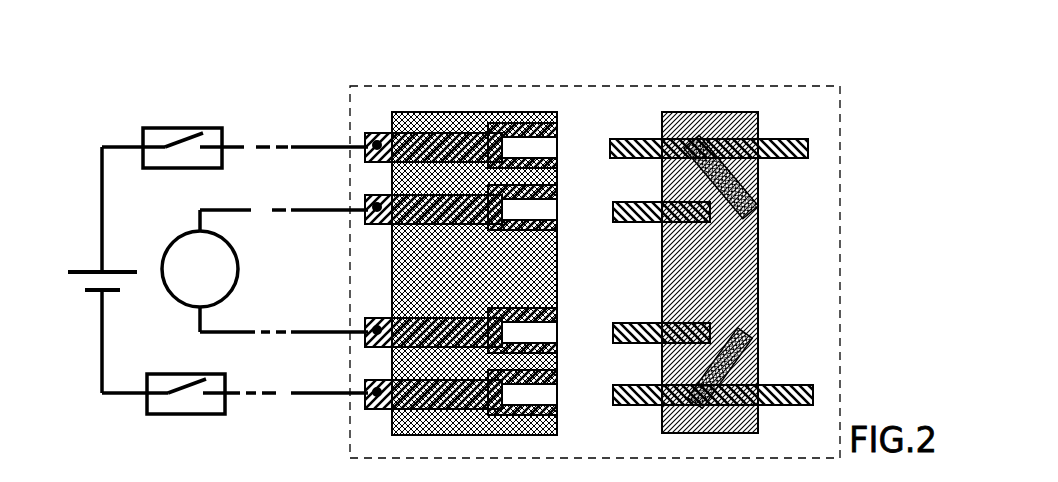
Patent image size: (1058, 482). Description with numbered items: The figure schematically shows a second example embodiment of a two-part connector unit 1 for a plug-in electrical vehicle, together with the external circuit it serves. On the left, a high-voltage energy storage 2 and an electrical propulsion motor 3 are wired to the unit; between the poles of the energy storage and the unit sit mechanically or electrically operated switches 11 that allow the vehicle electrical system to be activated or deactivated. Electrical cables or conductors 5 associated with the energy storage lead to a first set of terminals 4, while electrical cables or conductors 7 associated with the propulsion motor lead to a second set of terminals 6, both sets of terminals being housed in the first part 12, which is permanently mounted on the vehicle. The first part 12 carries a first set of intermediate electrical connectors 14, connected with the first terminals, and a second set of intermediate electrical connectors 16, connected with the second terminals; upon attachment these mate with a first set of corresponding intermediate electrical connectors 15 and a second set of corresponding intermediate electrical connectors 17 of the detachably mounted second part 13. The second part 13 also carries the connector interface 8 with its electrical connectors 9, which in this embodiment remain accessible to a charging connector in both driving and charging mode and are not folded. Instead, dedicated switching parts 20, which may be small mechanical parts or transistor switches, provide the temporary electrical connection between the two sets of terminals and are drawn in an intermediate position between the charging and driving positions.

The connector unit 1 is at (845, 193).
The high-voltage energy storage 2 is at (92, 270).
The electrical propulsion motor 3 is at (177, 305).
The first set of terminals 4 is at (363, 317).
The electrical cables or conductors 5 is at (237, 147).
The second set of terminals 6 is at (363, 380).
The electrical cables or conductors 7 is at (245, 212).
The connector interface 8 is at (817, 175).
The electrical connectors 9 is at (803, 385).
The switch 11 is at (158, 128).
The first part 12 is at (408, 112).
The second part 13 is at (698, 113).
The first set of intermediate electrical connectors 14 is at (558, 373).
The first set of corresponding intermediate electrical connectors 15 is at (615, 393).
The second set of intermediate electrical connectors 16 is at (558, 310).
The second set of corresponding intermediate electrical connectors 17 is at (615, 328).
The switching part 20 is at (752, 218).